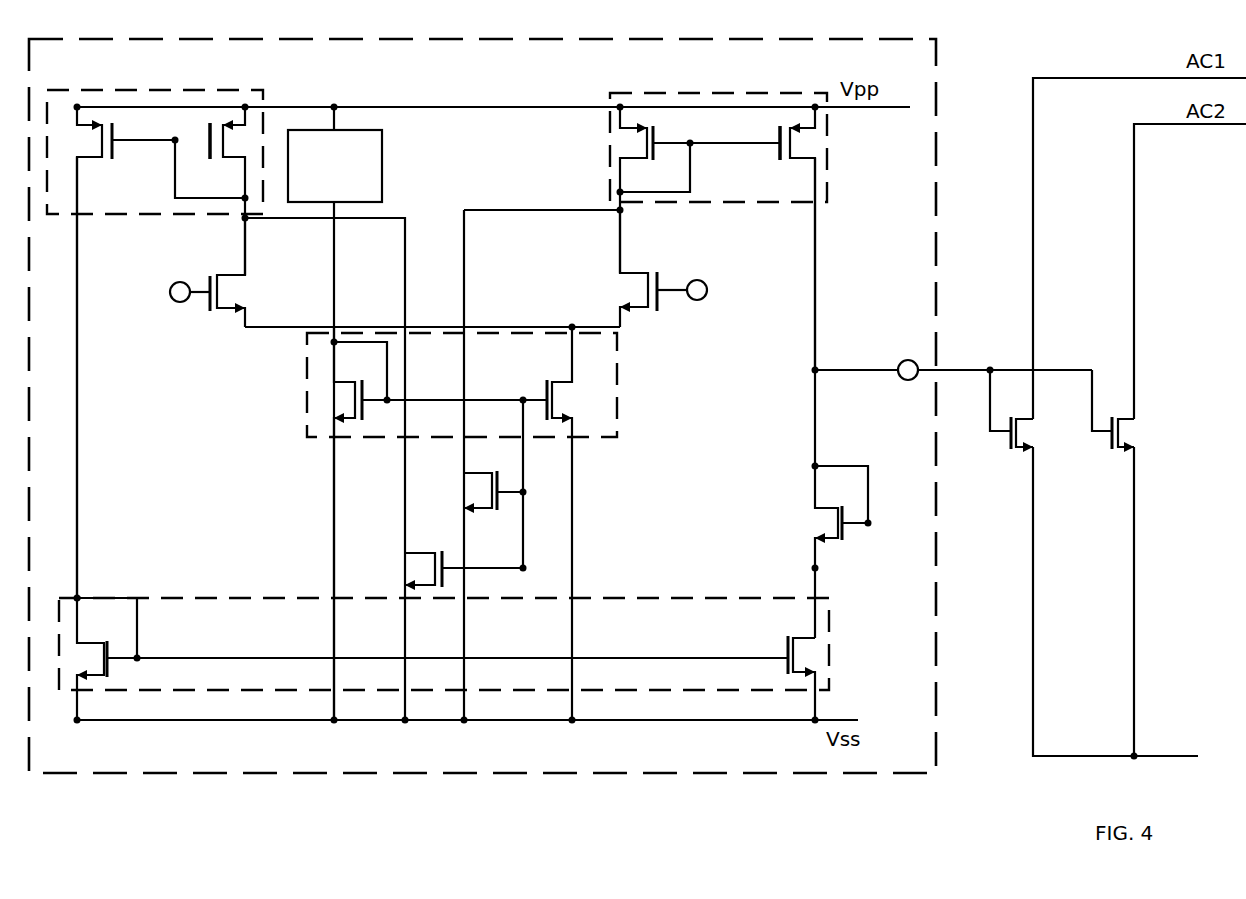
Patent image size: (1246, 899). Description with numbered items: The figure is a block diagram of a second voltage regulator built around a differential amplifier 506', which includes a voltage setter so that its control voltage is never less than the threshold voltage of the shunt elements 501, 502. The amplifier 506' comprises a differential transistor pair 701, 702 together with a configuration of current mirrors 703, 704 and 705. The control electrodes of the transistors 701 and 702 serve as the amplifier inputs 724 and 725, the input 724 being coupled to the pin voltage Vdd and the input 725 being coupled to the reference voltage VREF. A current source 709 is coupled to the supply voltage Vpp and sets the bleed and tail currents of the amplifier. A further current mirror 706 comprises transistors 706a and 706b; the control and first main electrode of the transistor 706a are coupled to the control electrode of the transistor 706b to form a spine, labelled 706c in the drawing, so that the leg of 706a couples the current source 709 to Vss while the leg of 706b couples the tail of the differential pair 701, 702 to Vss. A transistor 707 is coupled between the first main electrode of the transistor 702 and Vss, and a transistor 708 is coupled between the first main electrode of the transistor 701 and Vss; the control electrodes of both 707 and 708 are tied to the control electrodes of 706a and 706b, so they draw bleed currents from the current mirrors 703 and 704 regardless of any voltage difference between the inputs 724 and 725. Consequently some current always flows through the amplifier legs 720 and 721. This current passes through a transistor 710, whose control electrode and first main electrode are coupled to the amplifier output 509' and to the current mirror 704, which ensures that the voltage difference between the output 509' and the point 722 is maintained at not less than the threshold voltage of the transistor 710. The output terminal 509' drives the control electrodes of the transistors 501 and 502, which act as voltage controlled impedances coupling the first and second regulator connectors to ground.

The differential amplifier 506' is at (482, 394).
The current mirror 703 is at (97, 90).
The current mirror 704 is at (648, 93).
The current source 709 is at (359, 413).
The transistor 701 is at (238, 272).
The transistor 702 is at (628, 268).
The amplifier input 724 is at (161, 301).
The amplifier input 725 is at (705, 300).
The amplifier leg 720 is at (97, 377).
The amplifier leg 721 is at (797, 312).
The current mirror 706 is at (483, 522).
The transistor 706a is at (348, 523).
The transistor 706b is at (565, 522).
The gate node 706c is at (454, 386).
The transistor 707 is at (489, 484).
The transistor 708 is at (459, 570).
The transistor 710 is at (836, 516).
The point 722 is at (837, 597).
The current mirror 705 is at (153, 598).
The output terminal 509' is at (952, 356).
The transistor 501 is at (1135, 411).
The transistor 502 is at (1024, 411).